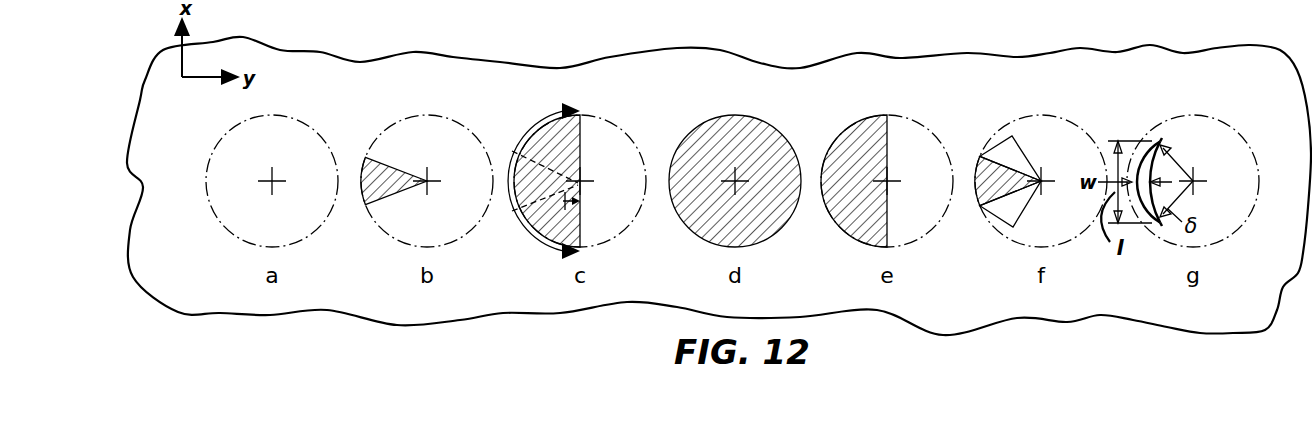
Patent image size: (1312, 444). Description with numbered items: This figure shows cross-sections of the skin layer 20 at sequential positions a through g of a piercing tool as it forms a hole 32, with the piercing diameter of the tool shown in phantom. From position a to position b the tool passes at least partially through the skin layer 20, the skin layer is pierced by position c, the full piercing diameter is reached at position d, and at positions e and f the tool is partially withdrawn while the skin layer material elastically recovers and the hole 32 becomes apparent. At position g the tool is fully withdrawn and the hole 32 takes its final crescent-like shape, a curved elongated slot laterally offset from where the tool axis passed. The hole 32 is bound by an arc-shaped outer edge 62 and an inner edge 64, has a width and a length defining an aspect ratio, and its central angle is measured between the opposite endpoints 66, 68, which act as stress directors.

The skin layer 20 is at (593, 82).
The hole 32 is at (1003, 150).
The outer edge 62 is at (1140, 213).
The inner edge 64 is at (1150, 165).
The endpoint 66 is at (1160, 141).
The endpoint 68 is at (1160, 223).